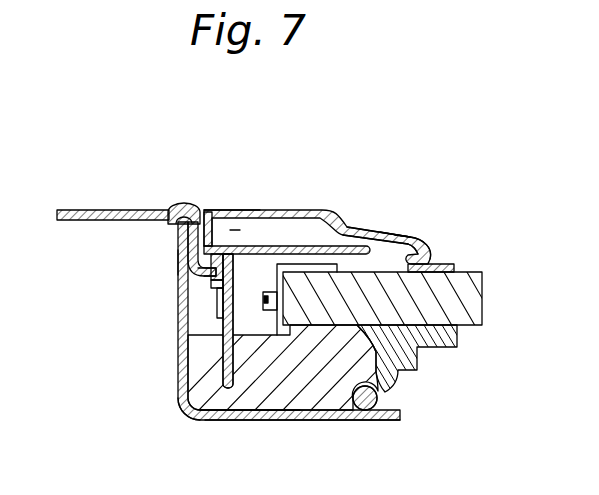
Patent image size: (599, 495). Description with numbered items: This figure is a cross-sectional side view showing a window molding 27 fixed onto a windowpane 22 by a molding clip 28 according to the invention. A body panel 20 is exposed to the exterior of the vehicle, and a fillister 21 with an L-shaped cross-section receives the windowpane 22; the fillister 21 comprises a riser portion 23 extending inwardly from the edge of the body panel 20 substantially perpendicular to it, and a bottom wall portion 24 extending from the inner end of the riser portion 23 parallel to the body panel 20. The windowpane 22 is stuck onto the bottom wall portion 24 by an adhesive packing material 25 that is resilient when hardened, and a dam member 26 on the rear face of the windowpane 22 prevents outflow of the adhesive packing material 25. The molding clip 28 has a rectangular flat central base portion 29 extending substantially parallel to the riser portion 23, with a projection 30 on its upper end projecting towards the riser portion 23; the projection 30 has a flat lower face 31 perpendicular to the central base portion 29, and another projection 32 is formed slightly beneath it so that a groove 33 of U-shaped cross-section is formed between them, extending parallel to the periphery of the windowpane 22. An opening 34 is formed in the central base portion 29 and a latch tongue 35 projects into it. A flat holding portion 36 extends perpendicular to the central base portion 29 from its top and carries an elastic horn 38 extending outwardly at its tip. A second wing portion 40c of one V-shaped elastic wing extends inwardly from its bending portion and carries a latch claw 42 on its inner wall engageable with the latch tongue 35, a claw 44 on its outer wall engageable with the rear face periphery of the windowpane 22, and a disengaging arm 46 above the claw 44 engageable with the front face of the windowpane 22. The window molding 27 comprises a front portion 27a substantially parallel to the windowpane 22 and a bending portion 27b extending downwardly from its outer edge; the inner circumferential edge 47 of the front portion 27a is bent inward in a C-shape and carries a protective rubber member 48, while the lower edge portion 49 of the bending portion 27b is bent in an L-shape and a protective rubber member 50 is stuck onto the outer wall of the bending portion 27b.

The body panel 20 is at (94, 209).
The fillister 21 is at (181, 409).
The windowpane 22 is at (470, 326).
The riser portion 23 is at (178, 367).
The bottom wall portion 24 is at (284, 415).
The adhesive packing material 25 is at (328, 395).
The dam member 26 is at (385, 399).
The window molding 27 is at (335, 227).
The front portion 27a is at (349, 229).
The bending portion 27b is at (207, 222).
The molding clip 28 is at (235, 239).
The central base portion 29 is at (223, 337).
The projection 30 is at (210, 266).
The flat lower face 31 is at (213, 212).
The projection 32 is at (214, 280).
The groove 33 is at (198, 276).
The opening 34 is at (216, 296).
The latch tongue 35 is at (216, 318).
The holding portion 36 is at (270, 247).
The elastic horn 38 is at (411, 240).
The second wing portion 40c is at (267, 292).
The latch claw 42 is at (300, 262).
The claw 44 is at (242, 413).
The disengaging arm 46 is at (362, 236).
The inner circumferential edge 47 is at (433, 256).
The rubber member 48 is at (440, 265).
The lower edge portion 49 is at (183, 262).
The rubber member 50 is at (179, 206).